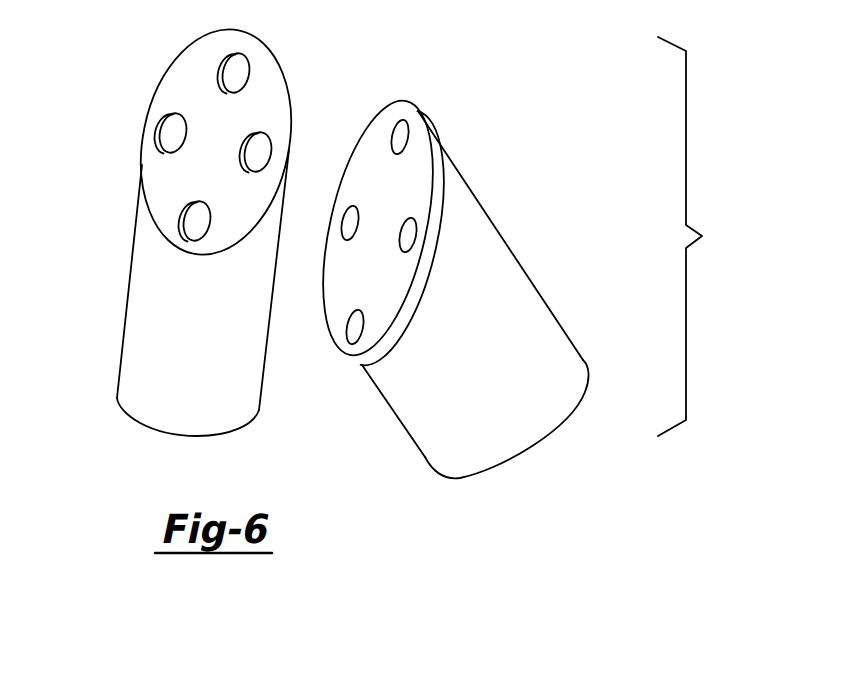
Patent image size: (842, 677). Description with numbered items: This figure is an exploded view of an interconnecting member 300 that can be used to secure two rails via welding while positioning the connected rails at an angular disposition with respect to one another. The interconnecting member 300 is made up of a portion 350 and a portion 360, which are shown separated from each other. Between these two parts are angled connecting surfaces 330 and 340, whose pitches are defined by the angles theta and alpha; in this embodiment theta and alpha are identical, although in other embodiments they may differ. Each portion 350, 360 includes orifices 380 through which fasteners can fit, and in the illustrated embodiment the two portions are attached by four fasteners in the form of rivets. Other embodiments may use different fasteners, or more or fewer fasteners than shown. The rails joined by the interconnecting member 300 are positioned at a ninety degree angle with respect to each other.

The interconnecting member 300 is at (701, 236).
The angled connecting surface 330 is at (187, 93).
The angled connecting surface 340 is at (383, 170).
The portion 350 is at (140, 325).
The portion 360 is at (529, 297).
The orifices 380 is at (159, 130).